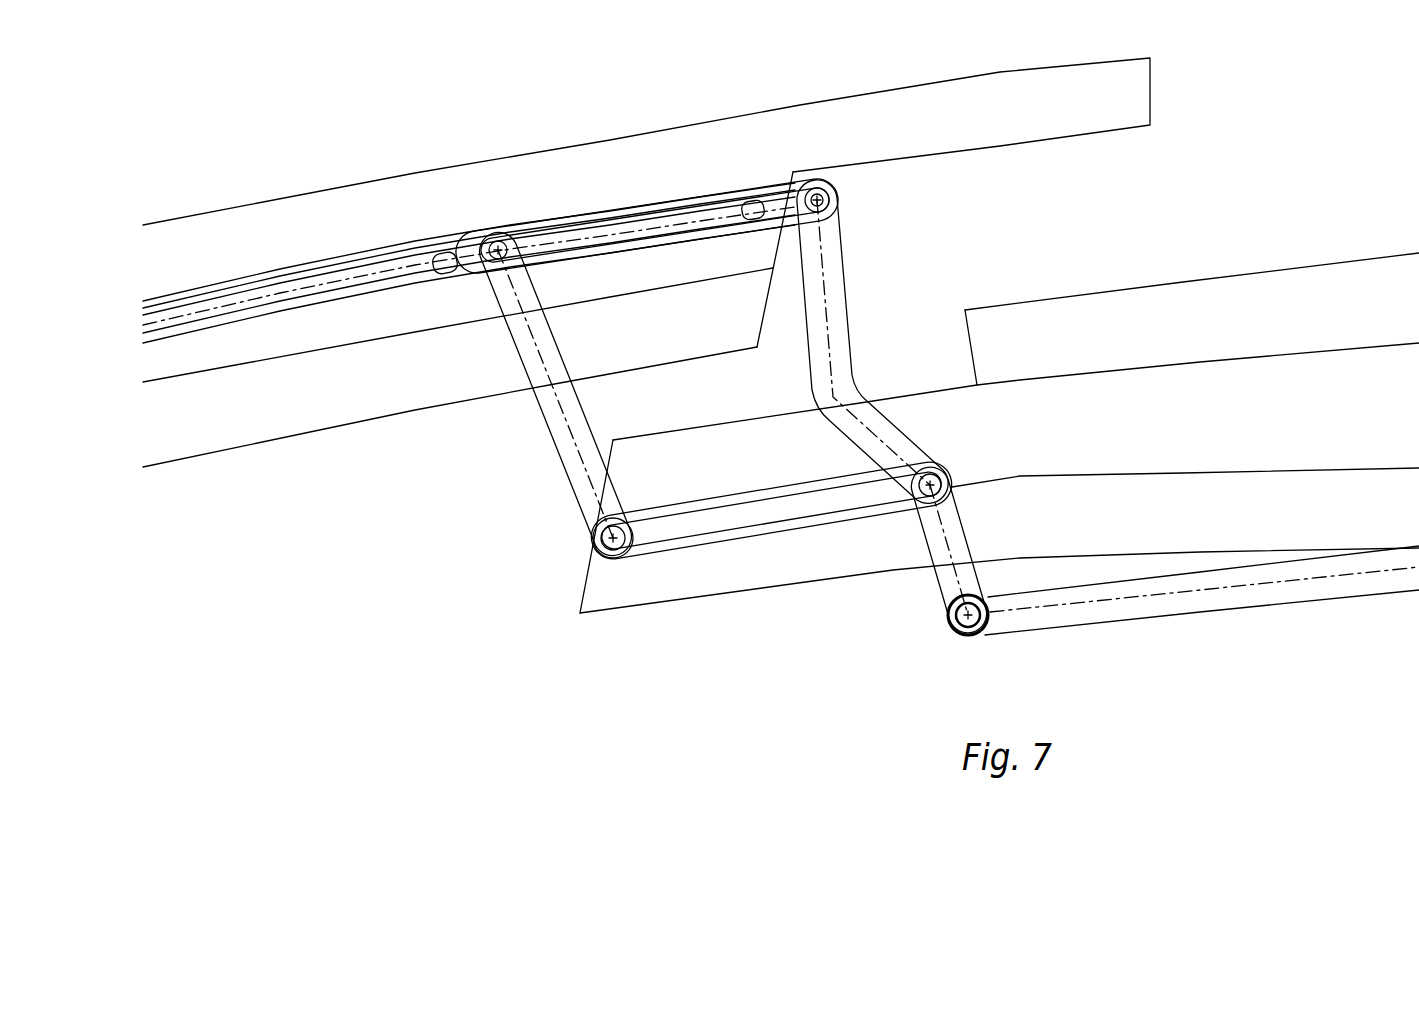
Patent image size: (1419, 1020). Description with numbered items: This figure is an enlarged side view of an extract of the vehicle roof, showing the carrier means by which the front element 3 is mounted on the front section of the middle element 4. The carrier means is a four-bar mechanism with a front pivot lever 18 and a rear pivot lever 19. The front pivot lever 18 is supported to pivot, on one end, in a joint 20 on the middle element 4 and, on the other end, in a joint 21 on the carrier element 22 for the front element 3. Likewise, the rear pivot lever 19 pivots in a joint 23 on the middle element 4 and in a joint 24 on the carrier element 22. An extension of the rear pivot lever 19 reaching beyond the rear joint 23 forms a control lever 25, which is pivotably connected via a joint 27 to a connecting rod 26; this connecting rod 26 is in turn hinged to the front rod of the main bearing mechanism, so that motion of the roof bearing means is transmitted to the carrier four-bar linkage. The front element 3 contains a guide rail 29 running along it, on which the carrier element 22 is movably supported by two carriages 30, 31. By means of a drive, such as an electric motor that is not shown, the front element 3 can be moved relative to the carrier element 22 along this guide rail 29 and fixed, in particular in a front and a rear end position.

The front element 3 is at (788, 104).
The middle element 4 is at (1229, 262).
The front pivot lever 18 is at (565, 414).
The rear pivot lever 19 is at (835, 290).
The joint 20 is at (613, 540).
The joint 21 is at (498, 250).
The carrier element 22 is at (562, 272).
The joint 23 is at (925, 493).
The joint 24 is at (818, 180).
The control lever 25 is at (940, 547).
The connecting rod 26 is at (1150, 592).
The joint 27 is at (967, 618).
The guide rail 29 is at (352, 283).
The carriage 30 is at (443, 258).
The carriage 31 is at (763, 205).